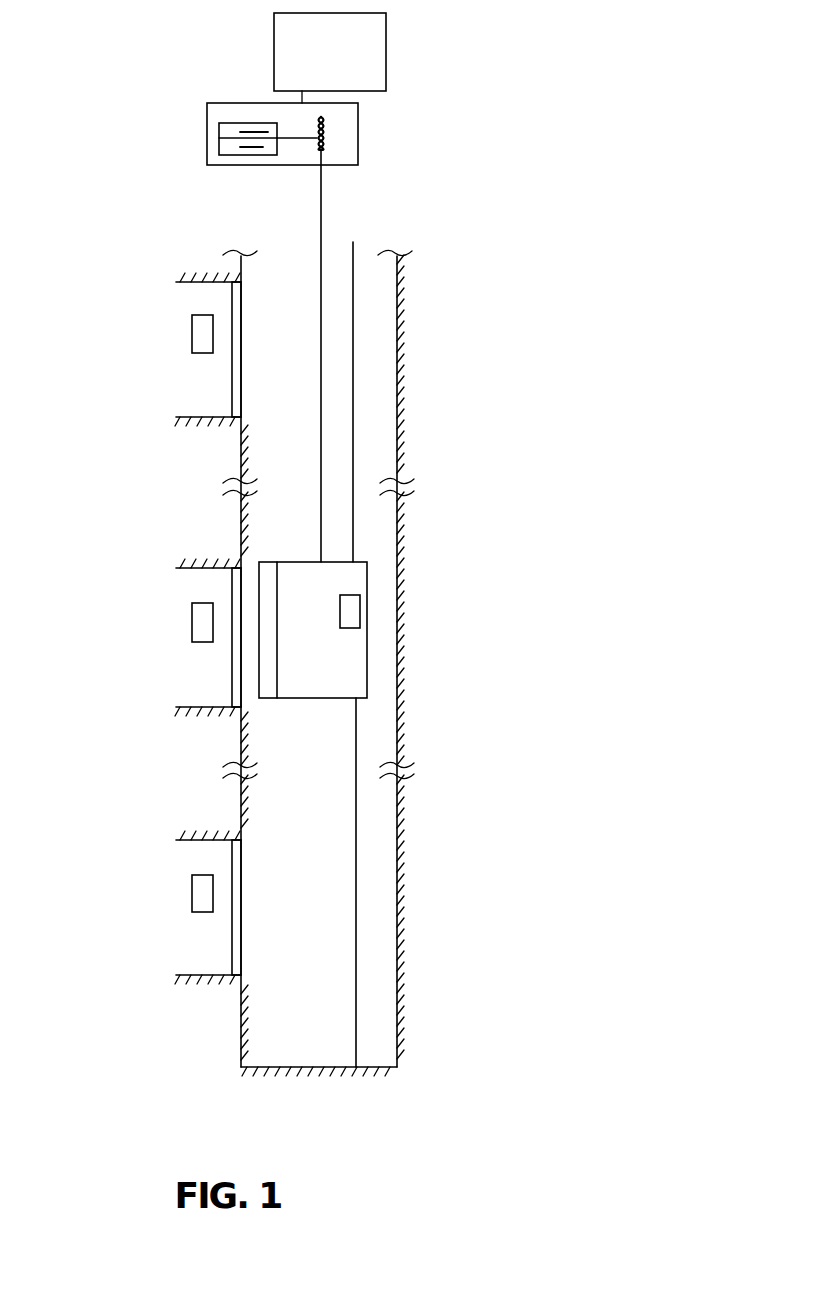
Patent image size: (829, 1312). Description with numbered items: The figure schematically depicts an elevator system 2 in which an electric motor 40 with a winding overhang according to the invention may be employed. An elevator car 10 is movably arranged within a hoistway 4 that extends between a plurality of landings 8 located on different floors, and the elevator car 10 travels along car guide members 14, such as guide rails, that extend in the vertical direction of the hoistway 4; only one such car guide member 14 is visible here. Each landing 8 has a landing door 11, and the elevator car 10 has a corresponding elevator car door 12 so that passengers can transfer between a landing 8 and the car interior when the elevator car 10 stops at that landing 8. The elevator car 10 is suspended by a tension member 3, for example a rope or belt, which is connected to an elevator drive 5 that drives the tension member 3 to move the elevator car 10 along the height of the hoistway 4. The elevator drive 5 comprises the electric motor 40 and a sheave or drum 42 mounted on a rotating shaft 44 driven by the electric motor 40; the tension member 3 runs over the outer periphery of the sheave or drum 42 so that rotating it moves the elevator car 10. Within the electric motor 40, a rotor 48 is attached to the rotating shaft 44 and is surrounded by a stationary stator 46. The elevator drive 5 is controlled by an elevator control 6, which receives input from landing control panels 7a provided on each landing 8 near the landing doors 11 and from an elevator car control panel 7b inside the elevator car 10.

The elevator system 2 is at (82, 676).
The tension member 3 is at (322, 213).
The hoistway 4 is at (391, 225).
The elevator drive 5 is at (183, 145).
The elevator control 6 is at (372, 53).
The landing control panel 7a is at (197, 327).
The elevator car control panel 7b is at (350, 629).
The landing 8 is at (191, 400).
The elevator car 10 is at (332, 549).
The landing door 11 is at (238, 365).
The elevator car door 12 is at (277, 613).
The car guide member 14 is at (352, 371).
The electric motor 40 is at (240, 166).
The sheave or drum 42 is at (340, 137).
The rotating shaft 44 is at (307, 138).
The stator 46 is at (262, 148).
The rotor 48 is at (233, 137).